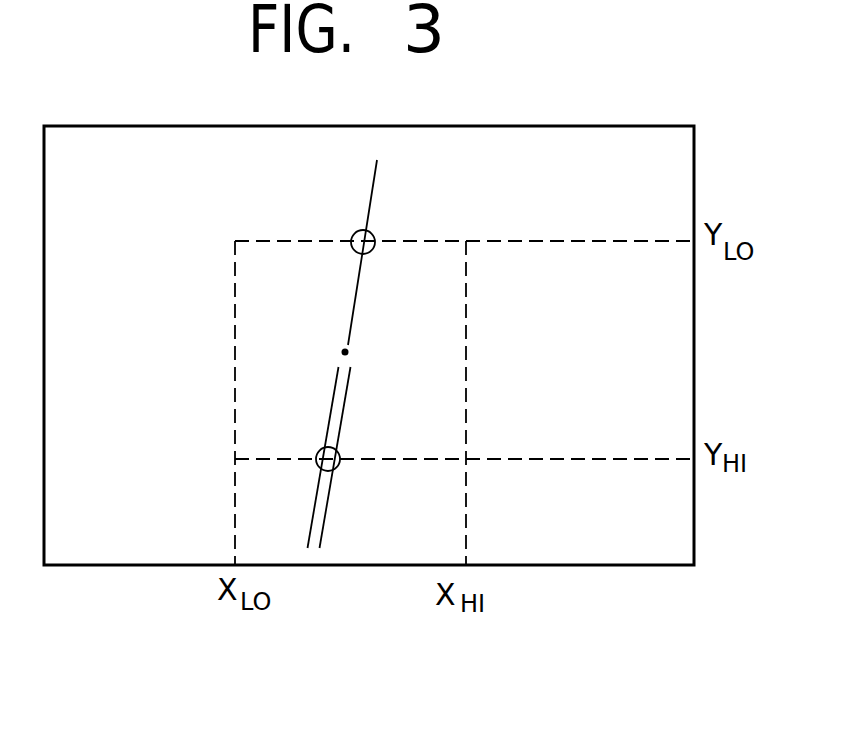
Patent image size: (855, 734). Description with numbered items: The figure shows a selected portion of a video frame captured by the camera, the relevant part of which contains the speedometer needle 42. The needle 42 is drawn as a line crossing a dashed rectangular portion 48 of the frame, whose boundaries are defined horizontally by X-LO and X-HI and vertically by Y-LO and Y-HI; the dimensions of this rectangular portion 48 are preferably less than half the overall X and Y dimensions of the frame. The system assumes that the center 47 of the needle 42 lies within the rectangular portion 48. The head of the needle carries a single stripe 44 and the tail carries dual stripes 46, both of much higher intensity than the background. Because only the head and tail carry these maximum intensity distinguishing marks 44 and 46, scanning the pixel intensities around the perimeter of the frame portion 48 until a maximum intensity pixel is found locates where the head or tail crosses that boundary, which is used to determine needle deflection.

The needle 42 is at (378, 299).
The single stripe 44 is at (353, 232).
The dual stripes 46 is at (338, 468).
The center of the needle 47 is at (343, 350).
The rectangular portion of the frame 48 is at (222, 364).